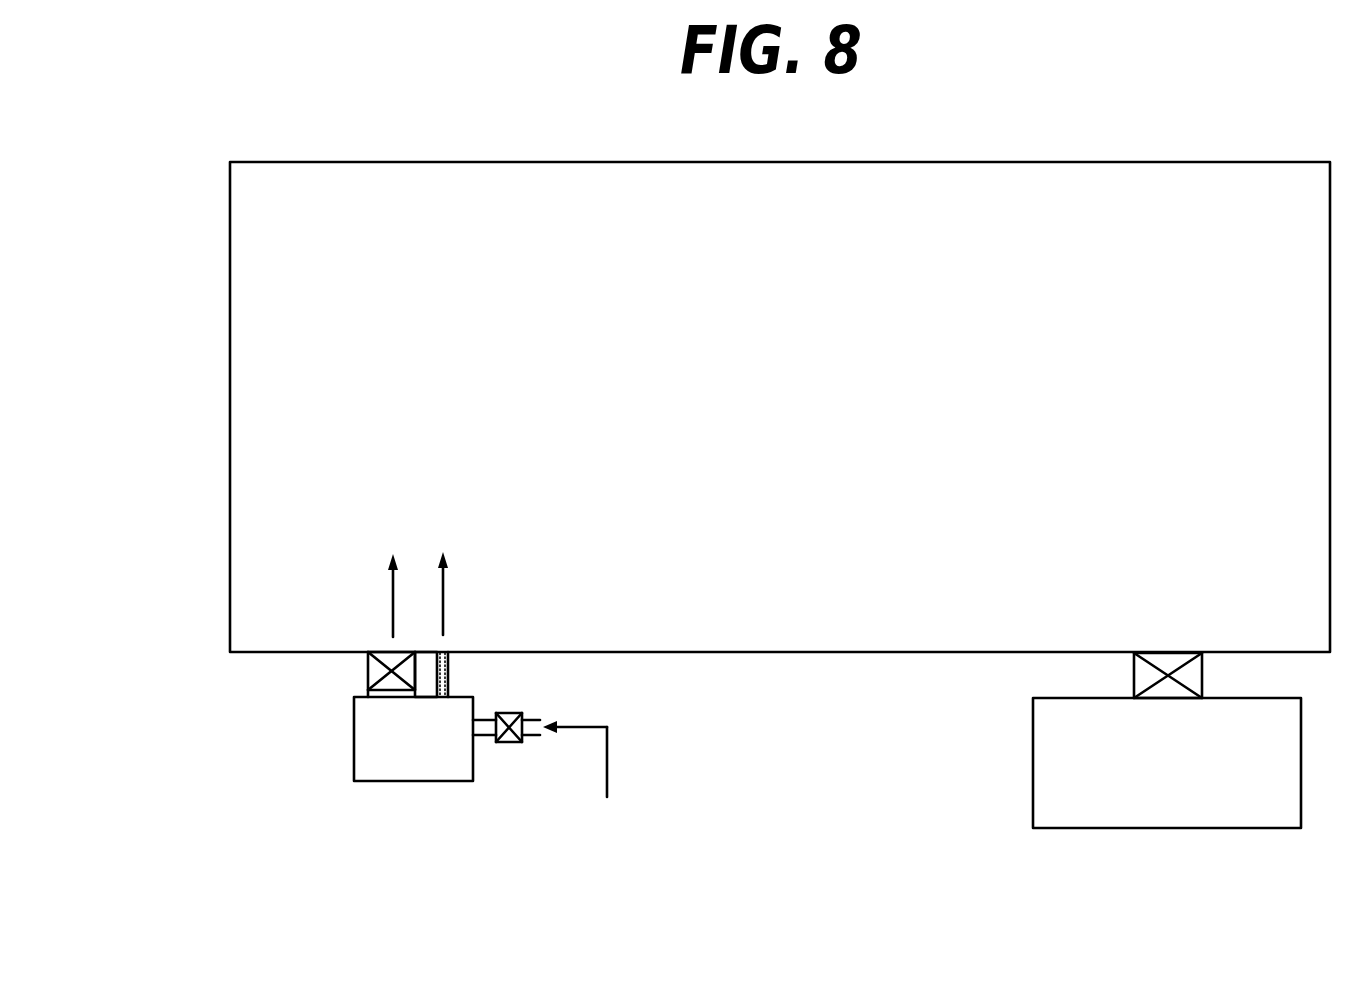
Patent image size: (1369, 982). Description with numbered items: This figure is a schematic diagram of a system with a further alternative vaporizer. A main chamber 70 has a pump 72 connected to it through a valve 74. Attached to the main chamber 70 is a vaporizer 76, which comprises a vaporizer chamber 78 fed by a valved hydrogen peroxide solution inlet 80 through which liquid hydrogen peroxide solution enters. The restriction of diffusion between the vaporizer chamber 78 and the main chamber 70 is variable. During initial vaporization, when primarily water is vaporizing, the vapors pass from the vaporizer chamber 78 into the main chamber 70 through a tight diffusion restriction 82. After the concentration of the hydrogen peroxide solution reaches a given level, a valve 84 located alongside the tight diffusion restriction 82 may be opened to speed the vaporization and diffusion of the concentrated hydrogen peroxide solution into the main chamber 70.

The chamber 70 is at (938, 150).
The pump 72 is at (1012, 763).
The valve 74 is at (1093, 670).
The vaporizer 76 is at (381, 804).
The chamber 78 is at (353, 737).
The valved hydrogen peroxide solution inlet 80 is at (537, 737).
The tight diffusion restriction 82 is at (443, 650).
The valve 84 is at (385, 656).